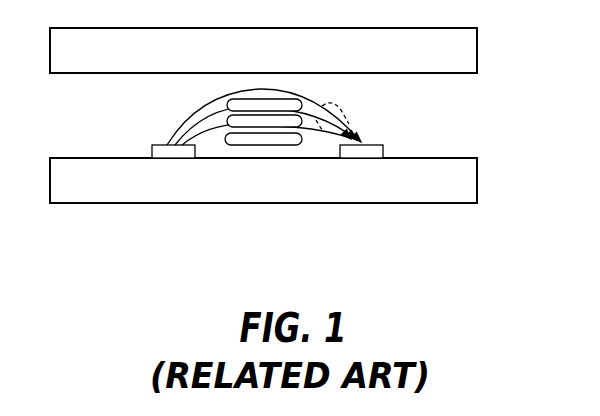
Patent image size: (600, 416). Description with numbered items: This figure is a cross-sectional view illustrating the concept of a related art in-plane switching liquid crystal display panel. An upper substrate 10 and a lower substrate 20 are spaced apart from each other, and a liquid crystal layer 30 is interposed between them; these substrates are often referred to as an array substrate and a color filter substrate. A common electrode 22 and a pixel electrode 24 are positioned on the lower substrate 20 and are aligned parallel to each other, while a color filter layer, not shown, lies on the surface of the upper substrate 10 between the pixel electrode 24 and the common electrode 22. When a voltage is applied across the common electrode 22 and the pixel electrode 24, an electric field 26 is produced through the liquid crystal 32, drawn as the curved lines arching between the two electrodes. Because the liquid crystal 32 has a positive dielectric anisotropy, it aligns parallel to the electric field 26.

The upper substrate 10 is at (497, 28).
The lower substrate 20 is at (497, 158).
The common electrode 22 is at (172, 153).
The pixel electrode 24 is at (367, 153).
The electric field 26 is at (322, 130).
The liquid crystal layer 30 is at (497, 73).
The liquid crystal 32 is at (265, 145).